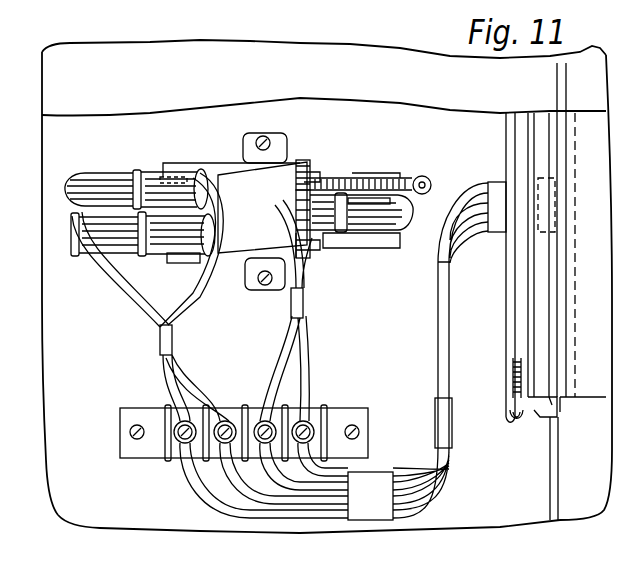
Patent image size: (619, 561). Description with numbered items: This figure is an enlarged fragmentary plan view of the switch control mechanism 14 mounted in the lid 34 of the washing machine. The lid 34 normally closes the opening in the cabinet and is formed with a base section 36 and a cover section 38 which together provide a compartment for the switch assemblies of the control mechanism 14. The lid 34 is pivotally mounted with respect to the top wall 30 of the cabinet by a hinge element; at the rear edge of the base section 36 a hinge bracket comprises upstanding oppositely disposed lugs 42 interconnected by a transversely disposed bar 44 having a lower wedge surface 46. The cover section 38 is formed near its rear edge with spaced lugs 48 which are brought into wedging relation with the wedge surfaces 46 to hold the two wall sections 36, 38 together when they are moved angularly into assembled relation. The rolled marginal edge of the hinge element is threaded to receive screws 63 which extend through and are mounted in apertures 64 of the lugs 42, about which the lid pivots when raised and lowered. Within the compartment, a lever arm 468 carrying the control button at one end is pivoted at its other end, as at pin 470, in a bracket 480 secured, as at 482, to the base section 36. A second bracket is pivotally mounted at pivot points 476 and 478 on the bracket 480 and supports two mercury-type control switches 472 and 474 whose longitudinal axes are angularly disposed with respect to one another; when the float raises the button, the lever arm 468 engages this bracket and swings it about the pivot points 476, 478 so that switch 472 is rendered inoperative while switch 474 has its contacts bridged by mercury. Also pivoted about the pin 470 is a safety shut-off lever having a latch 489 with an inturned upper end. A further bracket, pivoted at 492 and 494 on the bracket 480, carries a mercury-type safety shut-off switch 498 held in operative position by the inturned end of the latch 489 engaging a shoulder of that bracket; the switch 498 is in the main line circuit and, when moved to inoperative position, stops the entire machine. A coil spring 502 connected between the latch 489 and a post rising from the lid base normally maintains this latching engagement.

The control mechanism 14 is at (305, 311).
The top wall 30 is at (588, 58).
The lid 34 is at (50, 64).
The base section 36 is at (43, 403).
The cover section 38 is at (325, 46).
The lugs 42 is at (545, 416).
The bar 44 is at (552, 298).
The wedge surface 46 is at (559, 440).
The lugs 48 is at (556, 398).
The screws 63 is at (512, 420).
The apertures 64 is at (508, 398).
The lever arm 468 is at (228, 185).
The pivot pin 470 is at (310, 175).
The control switch 472 is at (80, 262).
The control switch 474 is at (80, 181).
The pivot point 476 is at (160, 273).
The pivot point 478 is at (163, 178).
The bracket 480 is at (243, 262).
The securing means 482 is at (262, 138).
The latch 489 is at (296, 180).
The pivot point 492 is at (336, 180).
The pivot point 494 is at (338, 245).
The safety shut-off switch 498 is at (408, 235).
The coil spring 502 is at (370, 178).